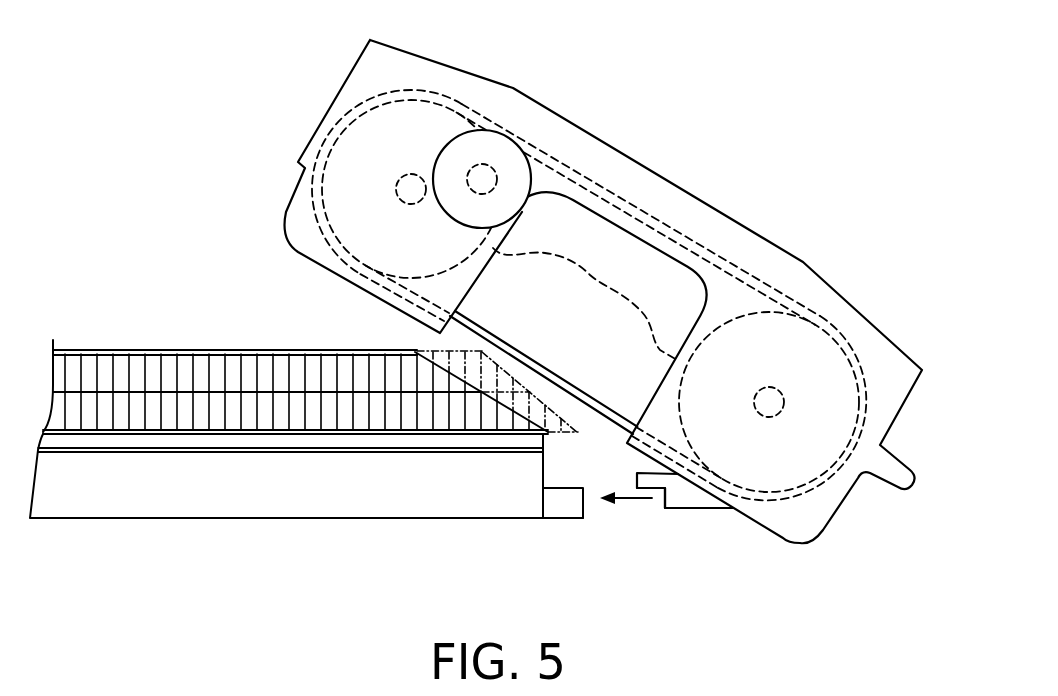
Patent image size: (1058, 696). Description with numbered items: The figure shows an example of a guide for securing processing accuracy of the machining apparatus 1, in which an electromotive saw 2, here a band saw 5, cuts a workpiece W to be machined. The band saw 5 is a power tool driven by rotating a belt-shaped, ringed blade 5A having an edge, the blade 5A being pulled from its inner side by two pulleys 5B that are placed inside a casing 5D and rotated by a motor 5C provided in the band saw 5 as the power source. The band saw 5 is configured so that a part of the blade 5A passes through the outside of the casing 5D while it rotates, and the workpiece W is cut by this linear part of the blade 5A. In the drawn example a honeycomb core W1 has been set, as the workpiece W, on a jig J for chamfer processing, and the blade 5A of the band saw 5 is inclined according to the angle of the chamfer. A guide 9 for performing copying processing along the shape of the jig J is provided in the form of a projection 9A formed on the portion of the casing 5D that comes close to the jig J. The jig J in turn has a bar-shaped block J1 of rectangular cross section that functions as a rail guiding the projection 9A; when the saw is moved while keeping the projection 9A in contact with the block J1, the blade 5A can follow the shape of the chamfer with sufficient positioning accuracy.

The machining apparatus 1 is at (827, 99).
The electromotive saw 2 is at (834, 280).
The band saw 5 is at (775, 236).
The blade 5A is at (541, 364).
The pulleys 5B is at (590, 296).
The motor 5C is at (520, 214).
The casing 5D is at (432, 61).
The guide 9 is at (716, 520).
The projection 9A is at (678, 512).
The jig J is at (278, 526).
The block J1 is at (562, 520).
The workpiece to be machined W is at (122, 343).
The honeycomb core W1 is at (250, 349).